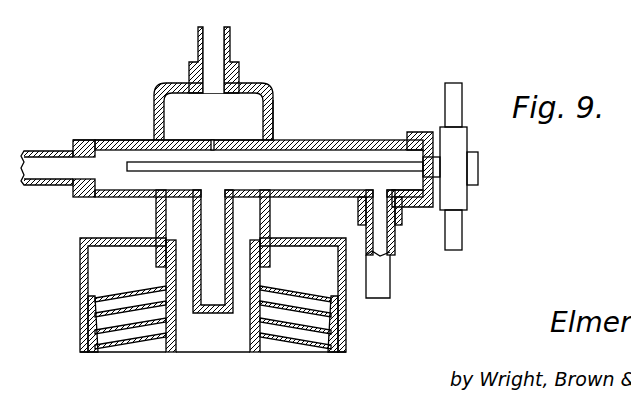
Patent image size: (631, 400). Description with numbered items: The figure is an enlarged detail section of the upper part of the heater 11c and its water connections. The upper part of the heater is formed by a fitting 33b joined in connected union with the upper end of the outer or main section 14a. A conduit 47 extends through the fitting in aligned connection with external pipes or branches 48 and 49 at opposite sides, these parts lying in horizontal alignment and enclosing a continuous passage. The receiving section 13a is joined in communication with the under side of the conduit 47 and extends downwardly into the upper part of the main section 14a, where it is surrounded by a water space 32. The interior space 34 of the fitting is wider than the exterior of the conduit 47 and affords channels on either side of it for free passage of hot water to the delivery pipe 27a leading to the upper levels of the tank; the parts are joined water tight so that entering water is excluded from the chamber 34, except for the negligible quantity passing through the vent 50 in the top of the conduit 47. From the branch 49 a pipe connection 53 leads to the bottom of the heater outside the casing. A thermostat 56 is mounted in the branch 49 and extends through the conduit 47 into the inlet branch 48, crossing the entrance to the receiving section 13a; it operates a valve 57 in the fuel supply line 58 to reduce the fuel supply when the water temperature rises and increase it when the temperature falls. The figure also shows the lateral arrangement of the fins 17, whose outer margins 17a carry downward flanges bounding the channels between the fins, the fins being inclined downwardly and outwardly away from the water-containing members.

The delivery pipe 27a is at (220, 42).
The interior space 34 is at (256, 102).
The fitting 33b is at (272, 120).
The inlet branch 48 is at (114, 139).
The conduit 47 is at (182, 140).
The vent 50 is at (213, 140).
The thermostat 56 is at (304, 164).
The branch 49 is at (372, 141).
The fuel supply line 58 is at (447, 95).
The valve 57 is at (460, 140).
The water space 32 is at (242, 252).
The receiving section 13a is at (232, 285).
The fins 17 is at (137, 318).
The outer margins 17a is at (87, 335).
The outer or main section 14a is at (172, 354).
The heater 11c is at (221, 349).
The pipe connection 53 is at (382, 290).